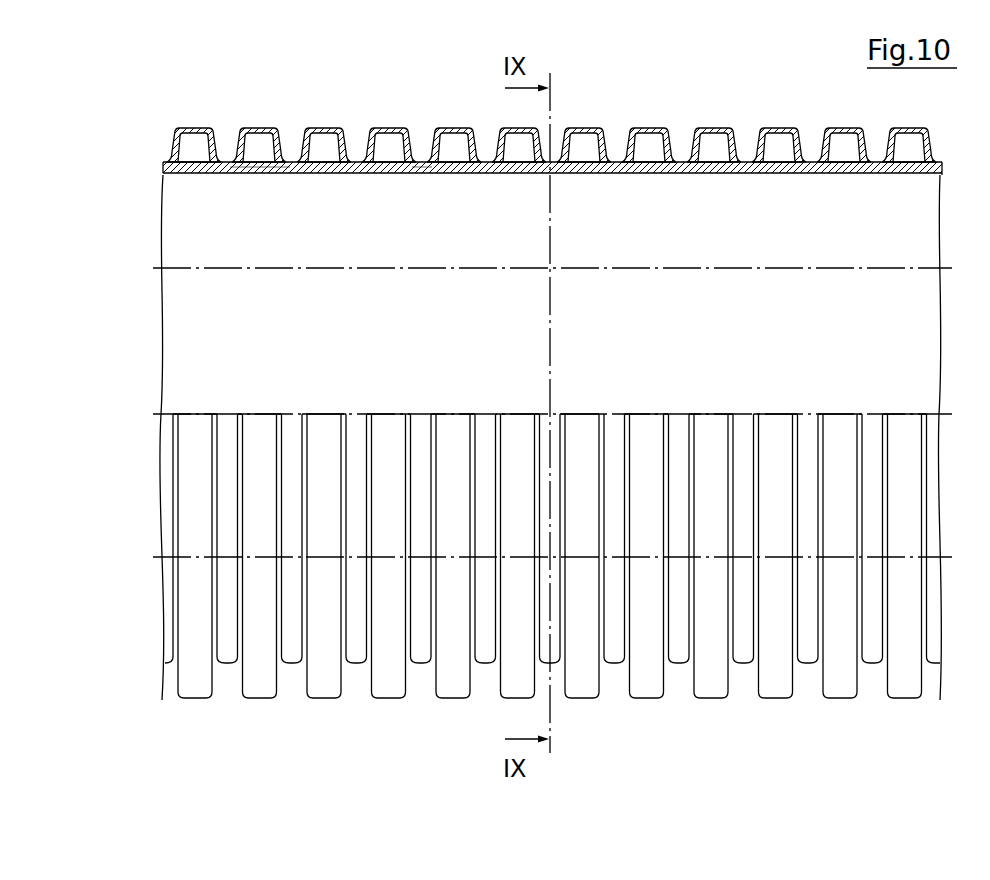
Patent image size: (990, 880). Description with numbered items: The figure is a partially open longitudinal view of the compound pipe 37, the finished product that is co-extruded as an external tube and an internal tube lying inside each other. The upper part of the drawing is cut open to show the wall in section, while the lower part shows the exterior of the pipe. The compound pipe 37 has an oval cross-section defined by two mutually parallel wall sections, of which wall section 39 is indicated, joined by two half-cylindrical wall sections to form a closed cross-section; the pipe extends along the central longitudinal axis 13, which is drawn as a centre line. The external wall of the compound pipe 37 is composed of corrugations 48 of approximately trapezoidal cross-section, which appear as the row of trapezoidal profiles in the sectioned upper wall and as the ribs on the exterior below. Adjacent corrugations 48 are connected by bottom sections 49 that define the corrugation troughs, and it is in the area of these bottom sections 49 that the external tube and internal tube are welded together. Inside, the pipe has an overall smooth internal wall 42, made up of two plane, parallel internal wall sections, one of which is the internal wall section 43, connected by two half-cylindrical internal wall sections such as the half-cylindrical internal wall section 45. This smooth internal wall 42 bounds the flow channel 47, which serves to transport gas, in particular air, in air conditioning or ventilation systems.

The central longitudinal axis 13 is at (154, 415).
The compound pipe 37 is at (654, 719).
The wall section 39 is at (195, 532).
The internal wall 42 is at (243, 181).
The internal wall section 43 is at (232, 342).
The half-cylindrical internal wall section 45 is at (257, 174).
The flow channel 47 is at (478, 361).
The corrugations 48 is at (389, 127).
The bottom sections 49 is at (420, 175).